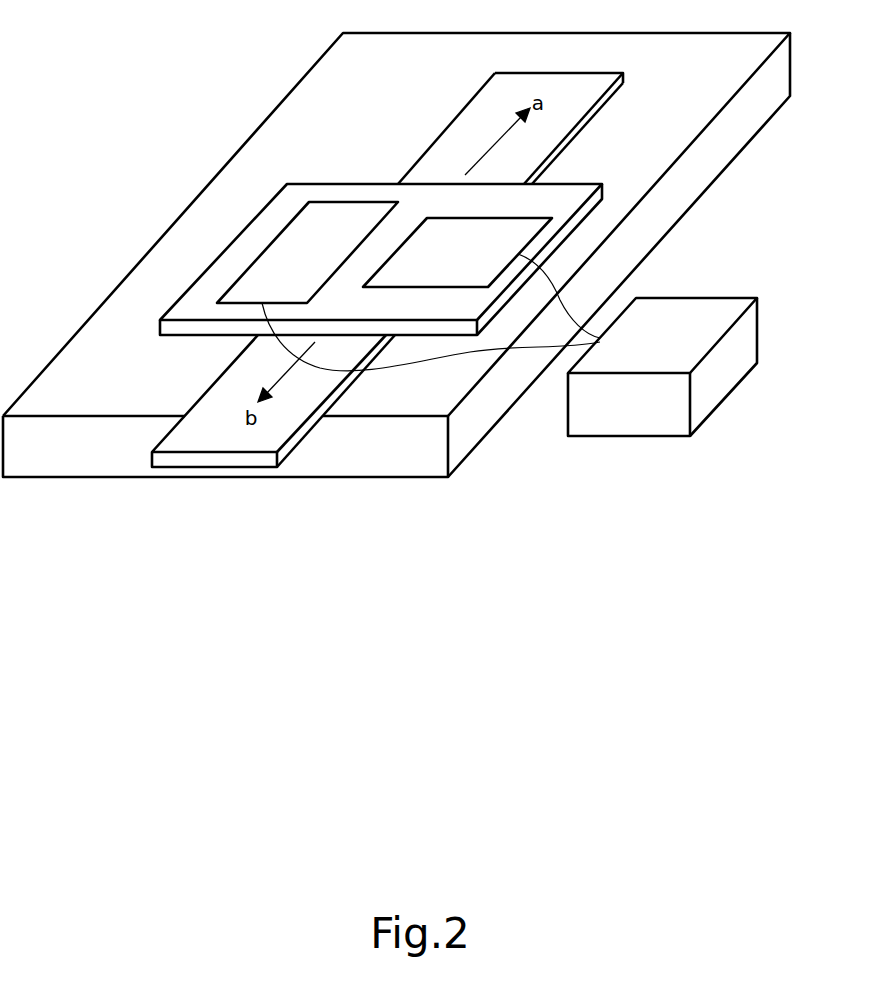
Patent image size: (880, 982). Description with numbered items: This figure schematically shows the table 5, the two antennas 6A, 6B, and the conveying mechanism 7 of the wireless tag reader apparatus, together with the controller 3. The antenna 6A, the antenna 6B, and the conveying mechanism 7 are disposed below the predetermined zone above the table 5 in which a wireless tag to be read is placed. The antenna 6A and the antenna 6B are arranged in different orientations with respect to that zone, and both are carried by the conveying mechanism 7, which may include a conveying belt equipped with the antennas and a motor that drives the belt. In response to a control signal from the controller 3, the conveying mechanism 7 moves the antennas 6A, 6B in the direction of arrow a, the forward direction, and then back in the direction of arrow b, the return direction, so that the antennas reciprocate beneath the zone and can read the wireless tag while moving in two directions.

The table 5 is at (190, 232).
The conveying mechanism 7 is at (213, 415).
The antenna 6A is at (334, 222).
The antenna 6B is at (510, 228).
The controller 3 is at (688, 335).